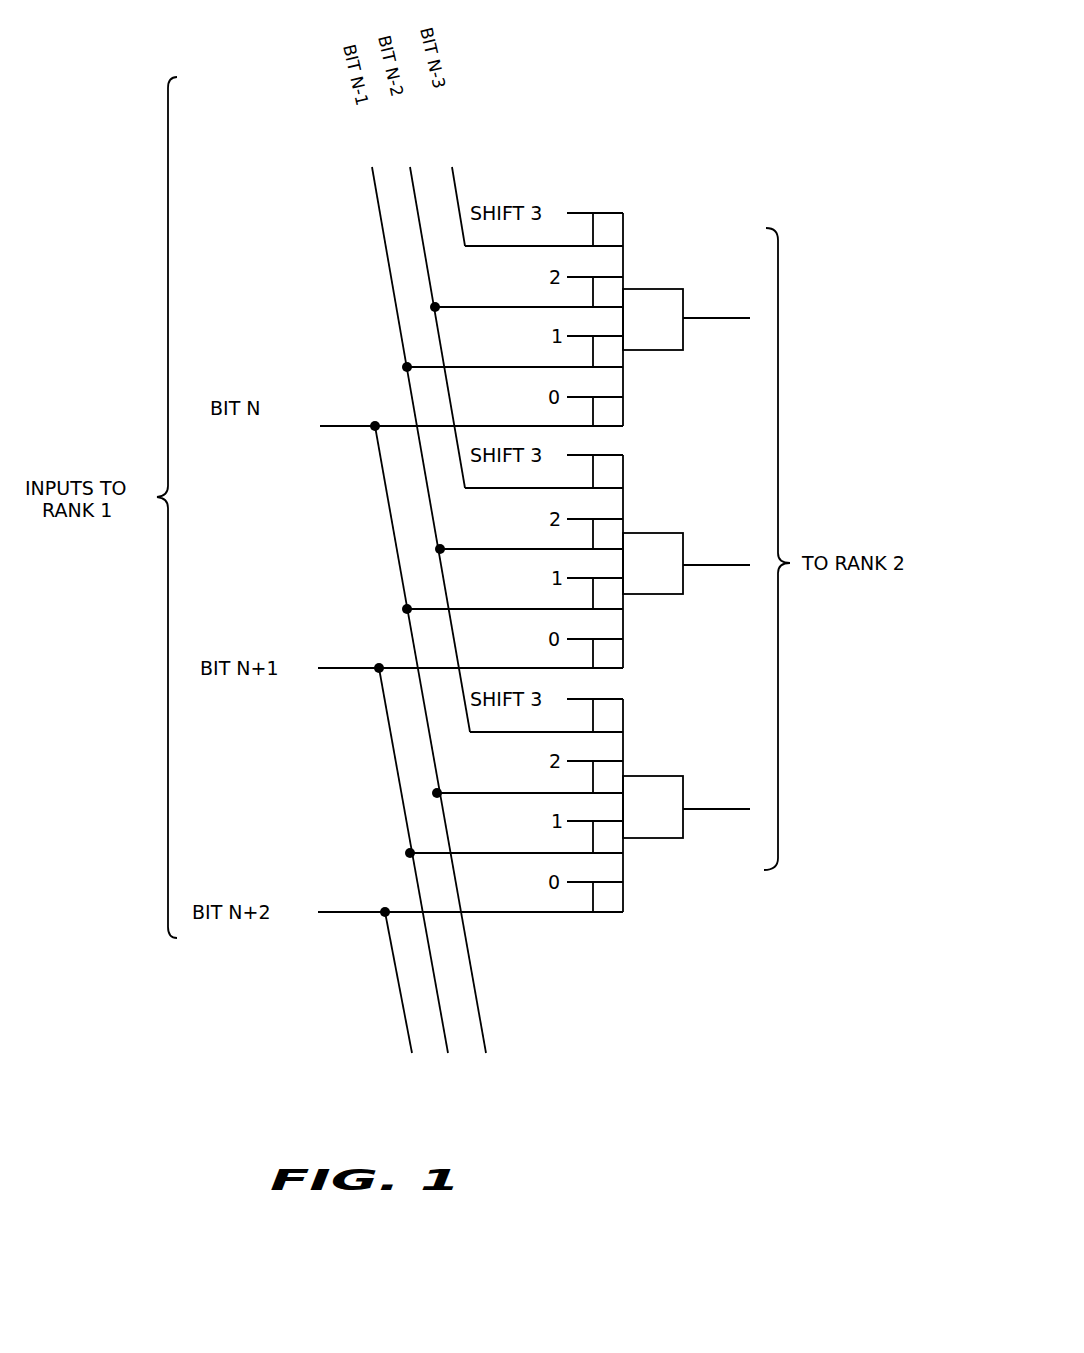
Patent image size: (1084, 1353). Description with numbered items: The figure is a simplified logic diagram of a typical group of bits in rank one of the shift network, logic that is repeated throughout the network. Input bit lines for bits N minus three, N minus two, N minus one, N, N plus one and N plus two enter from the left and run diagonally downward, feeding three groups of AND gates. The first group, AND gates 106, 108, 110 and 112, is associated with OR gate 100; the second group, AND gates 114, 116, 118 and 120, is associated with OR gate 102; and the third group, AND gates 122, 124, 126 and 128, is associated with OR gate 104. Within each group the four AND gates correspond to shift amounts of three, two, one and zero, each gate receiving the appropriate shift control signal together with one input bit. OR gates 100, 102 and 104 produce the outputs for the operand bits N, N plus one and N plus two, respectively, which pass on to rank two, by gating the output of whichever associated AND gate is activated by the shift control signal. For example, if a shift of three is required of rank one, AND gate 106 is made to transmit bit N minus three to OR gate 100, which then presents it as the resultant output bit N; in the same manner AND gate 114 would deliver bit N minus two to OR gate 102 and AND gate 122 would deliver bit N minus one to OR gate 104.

The OR gate 100 is at (677, 288).
The OR gate 102 is at (655, 532).
The OR gate 104 is at (655, 775).
The AND gate 106 is at (625, 217).
The AND gate 108 is at (625, 280).
The AND gate 110 is at (625, 357).
The AND gate 112 is at (625, 412).
The AND gate 114 is at (625, 470).
The AND gate 116 is at (592, 537).
The AND gate 118 is at (625, 600).
The AND gate 120 is at (625, 652).
The AND gate 122 is at (625, 713).
The AND gate 124 is at (592, 779).
The AND gate 126 is at (625, 843).
The AND gate 128 is at (625, 900).